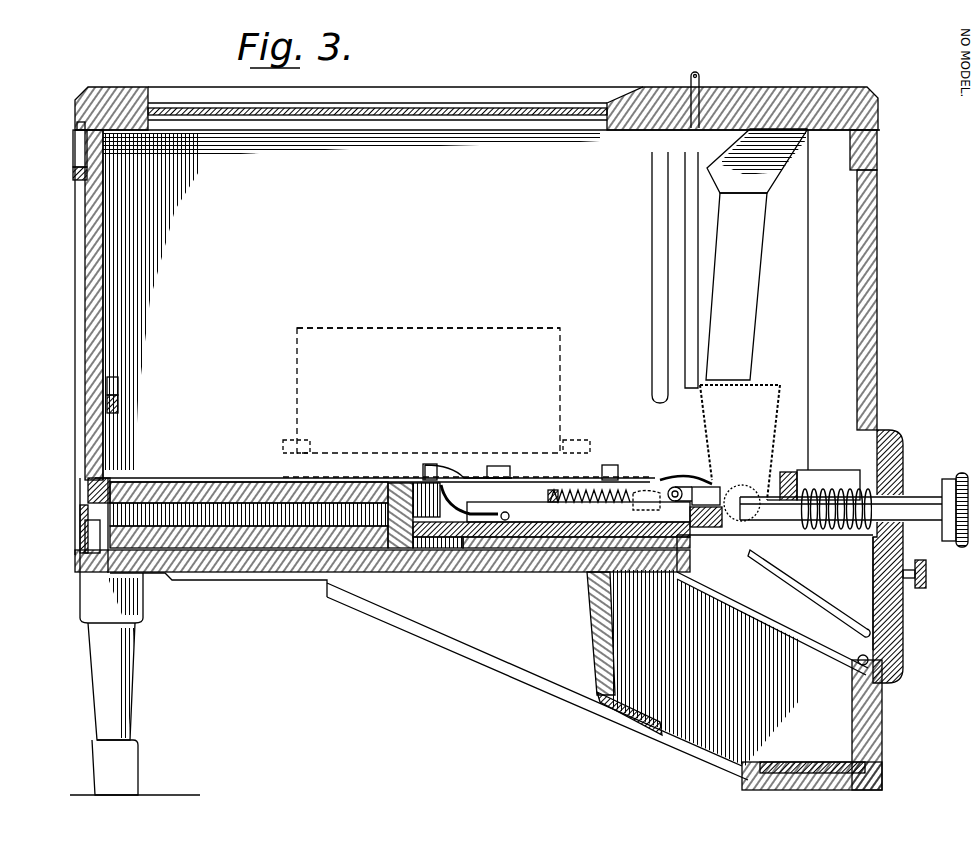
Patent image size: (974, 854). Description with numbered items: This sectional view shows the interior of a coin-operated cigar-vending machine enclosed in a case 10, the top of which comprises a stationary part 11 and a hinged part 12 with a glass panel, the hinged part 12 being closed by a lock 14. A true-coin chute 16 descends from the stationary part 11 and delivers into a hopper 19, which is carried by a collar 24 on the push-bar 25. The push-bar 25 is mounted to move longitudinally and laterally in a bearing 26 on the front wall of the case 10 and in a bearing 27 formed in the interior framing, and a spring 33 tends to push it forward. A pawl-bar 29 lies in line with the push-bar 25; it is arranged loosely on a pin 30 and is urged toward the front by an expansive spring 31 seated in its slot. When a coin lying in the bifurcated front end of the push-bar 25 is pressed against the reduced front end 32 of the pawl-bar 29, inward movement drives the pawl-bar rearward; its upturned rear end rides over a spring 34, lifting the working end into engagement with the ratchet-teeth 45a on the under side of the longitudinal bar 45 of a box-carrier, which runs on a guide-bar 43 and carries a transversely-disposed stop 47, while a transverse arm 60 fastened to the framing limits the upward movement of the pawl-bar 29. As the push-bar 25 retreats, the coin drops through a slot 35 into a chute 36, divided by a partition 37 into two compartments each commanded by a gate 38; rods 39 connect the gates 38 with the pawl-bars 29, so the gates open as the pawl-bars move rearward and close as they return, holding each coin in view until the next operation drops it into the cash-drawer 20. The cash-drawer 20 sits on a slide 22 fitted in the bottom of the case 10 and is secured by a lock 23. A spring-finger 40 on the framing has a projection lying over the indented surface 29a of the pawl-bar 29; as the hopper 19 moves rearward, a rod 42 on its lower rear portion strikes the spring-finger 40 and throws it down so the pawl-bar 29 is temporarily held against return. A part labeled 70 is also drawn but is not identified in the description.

The case 10 is at (820, 780).
The stationary part 11 is at (758, 104).
The hinged part 12 is at (396, 88).
The lock 14 is at (73, 148).
The true-coin chute 16 is at (756, 254).
The hopper 19 is at (740, 442).
The cash-drawer 20 is at (721, 668).
The slide 22 is at (258, 565).
The lock 23 is at (85, 528).
The collar 24 is at (781, 472).
The push-bar 25 is at (925, 503).
The bearing 26 is at (905, 495).
The bearing 27 is at (787, 472).
The pawl-bar 29 is at (640, 500).
The indented surfaces 29a is at (590, 578).
The pins 30 is at (555, 490).
The expansive springs 31 is at (590, 506).
The reduced front end 32 is at (706, 507).
The spring 33 is at (828, 485).
The spring 34 is at (470, 503).
The slots 35 is at (775, 605).
The chute 36 is at (772, 625).
The partition 37 is at (851, 593).
The gates 38 is at (860, 664).
The rods 39 is at (782, 580).
The spring-fingers 40 is at (707, 478).
The transversely-disposed rod 42 is at (734, 484).
The guide-bars 43 is at (188, 482).
The longitudinal bar 45 is at (350, 467).
The ratchet-teeth 45a is at (323, 455).
The transversely-disposed stop 47 is at (674, 486).
The transverse arm 60 is at (468, 466).
The casing wall 70 is at (878, 355).